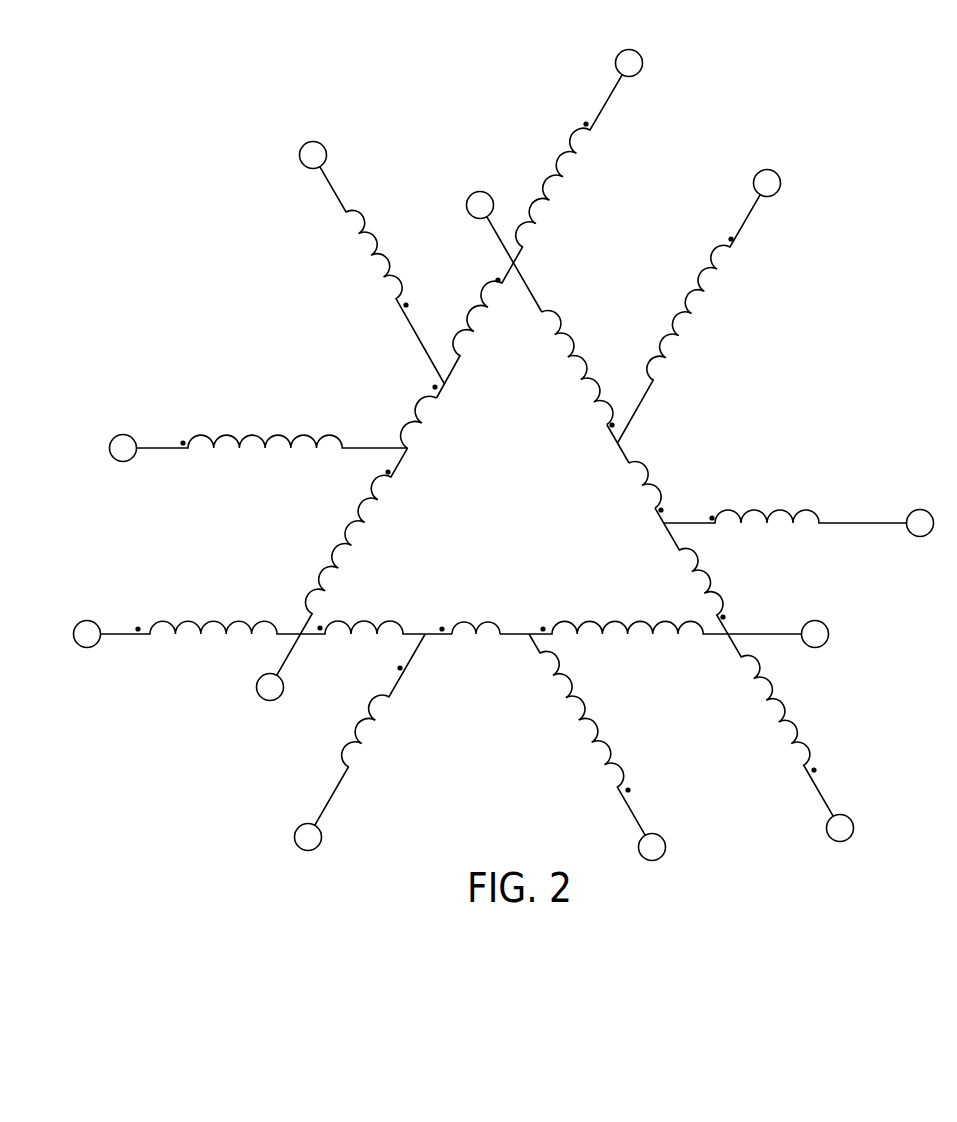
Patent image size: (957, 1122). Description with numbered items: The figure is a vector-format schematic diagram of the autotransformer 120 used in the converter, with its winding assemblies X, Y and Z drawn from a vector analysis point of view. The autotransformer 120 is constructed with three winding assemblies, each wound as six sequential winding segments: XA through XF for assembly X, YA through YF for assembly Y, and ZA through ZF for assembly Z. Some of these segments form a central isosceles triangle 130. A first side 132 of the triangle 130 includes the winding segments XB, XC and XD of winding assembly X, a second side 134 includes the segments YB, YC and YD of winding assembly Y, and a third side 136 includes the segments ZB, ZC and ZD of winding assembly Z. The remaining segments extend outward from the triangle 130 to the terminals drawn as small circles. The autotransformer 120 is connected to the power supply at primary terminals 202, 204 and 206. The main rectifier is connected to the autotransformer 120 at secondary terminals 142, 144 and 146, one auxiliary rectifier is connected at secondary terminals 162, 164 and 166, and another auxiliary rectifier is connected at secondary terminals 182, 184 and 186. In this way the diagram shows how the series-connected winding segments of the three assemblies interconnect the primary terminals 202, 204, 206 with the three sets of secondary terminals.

The autotransformer 120 is at (79, 135).
The central isosceles triangle 130 is at (541, 403).
The first side 132 is at (436, 396).
The second side 134 is at (632, 465).
The third side 136 is at (520, 607).
The secondary terminal 142 is at (639, 75).
The secondary terminal 144 is at (850, 815).
The secondary terminal 146 is at (87, 620).
The secondary terminal 162 is at (772, 196).
The secondary terminal 164 is at (660, 835).
The secondary terminal 166 is at (123, 435).
The secondary terminal 182 is at (300, 155).
The secondary terminal 184 is at (920, 509).
The secondary terminal 186 is at (321, 832).
The primary terminal 202 is at (466, 205).
The primary terminal 204 is at (270, 701).
The primary terminal 206 is at (815, 620).